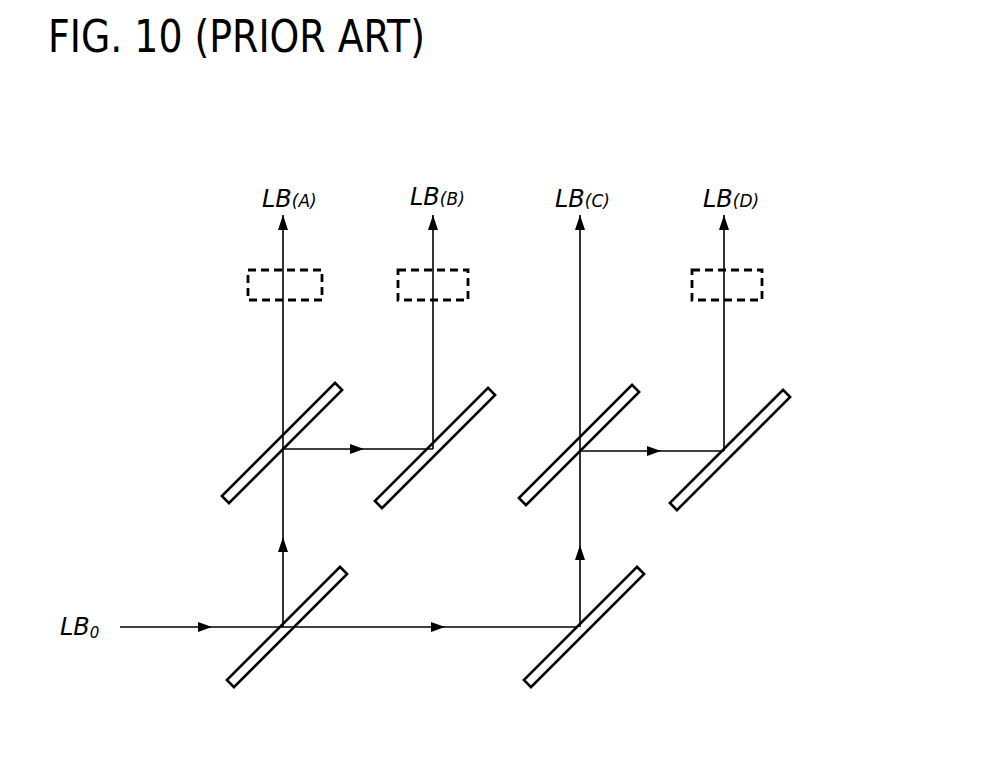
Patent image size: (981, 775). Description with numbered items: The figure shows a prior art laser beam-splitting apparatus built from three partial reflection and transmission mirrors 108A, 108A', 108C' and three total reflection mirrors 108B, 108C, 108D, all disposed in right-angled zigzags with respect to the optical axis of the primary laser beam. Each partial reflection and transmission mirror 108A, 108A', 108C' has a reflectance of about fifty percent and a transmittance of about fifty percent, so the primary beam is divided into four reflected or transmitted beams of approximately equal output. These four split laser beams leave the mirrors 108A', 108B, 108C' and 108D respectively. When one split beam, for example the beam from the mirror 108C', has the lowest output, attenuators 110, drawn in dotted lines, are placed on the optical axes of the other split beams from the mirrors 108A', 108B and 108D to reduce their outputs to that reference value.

The attenuator 110 is at (248, 284).
The partial reflection and transmission mirror 108A is at (287, 651).
The partial reflection and transmission mirror 108A' is at (235, 443).
The total reflection mirror 108B is at (403, 492).
The total reflection mirror 108C is at (584, 651).
The partial reflection and transmission mirror 108C' is at (595, 411).
The total reflection mirror 108D is at (702, 487).